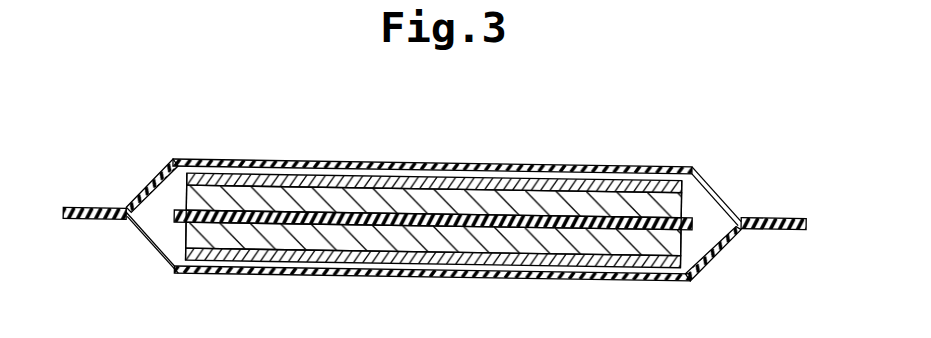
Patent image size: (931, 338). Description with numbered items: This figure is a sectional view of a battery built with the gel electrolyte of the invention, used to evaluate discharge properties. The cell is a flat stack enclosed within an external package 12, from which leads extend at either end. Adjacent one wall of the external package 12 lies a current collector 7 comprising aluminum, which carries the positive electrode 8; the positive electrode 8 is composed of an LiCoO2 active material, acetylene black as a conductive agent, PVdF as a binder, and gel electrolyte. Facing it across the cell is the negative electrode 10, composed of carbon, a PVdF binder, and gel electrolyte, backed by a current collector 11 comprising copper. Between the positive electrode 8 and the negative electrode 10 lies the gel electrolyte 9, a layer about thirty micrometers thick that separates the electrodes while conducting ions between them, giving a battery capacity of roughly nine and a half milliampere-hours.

The current collector 7 is at (703, 183).
The positive electrode 8 is at (675, 208).
The gel electrolyte 9 is at (693, 227).
The negative electrode 10 is at (675, 242).
The current collector 11 is at (703, 262).
The external package 12 is at (158, 173).